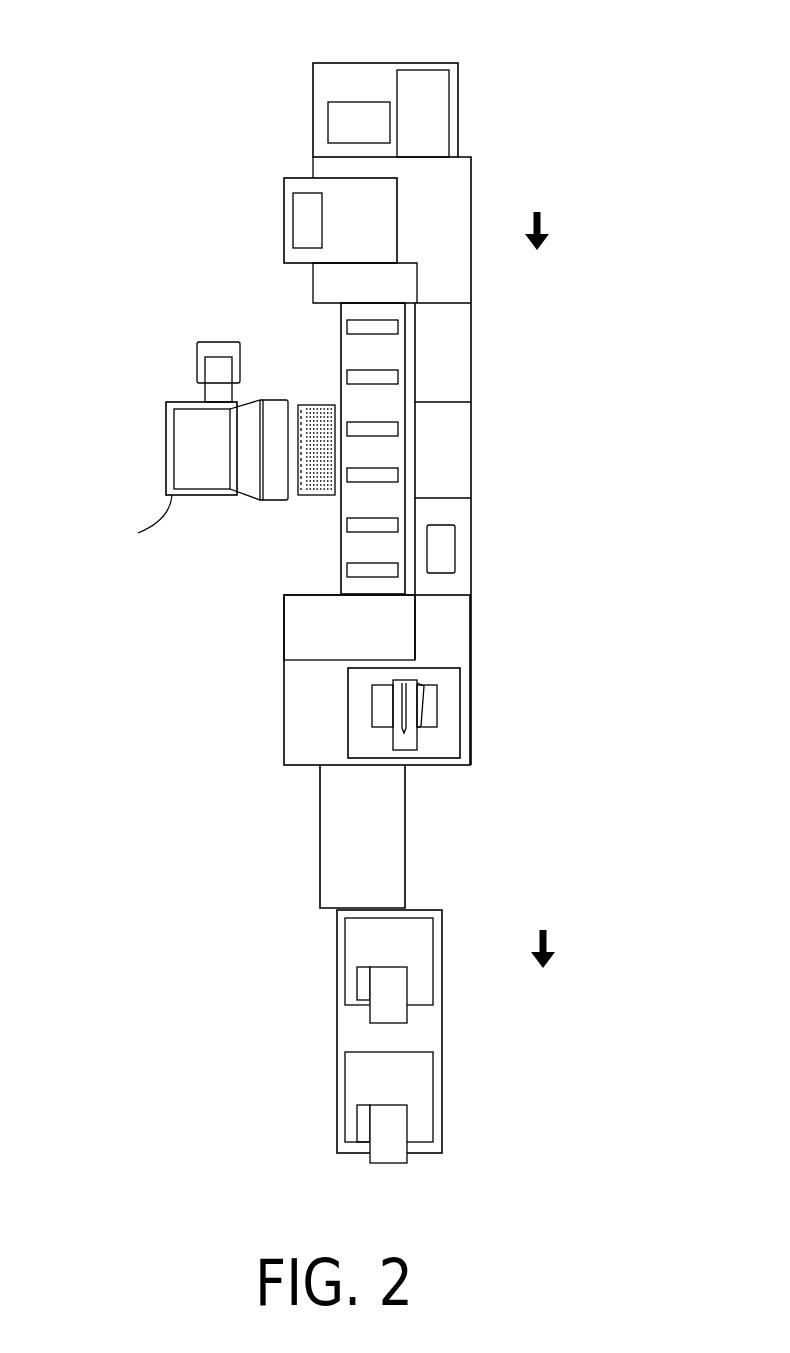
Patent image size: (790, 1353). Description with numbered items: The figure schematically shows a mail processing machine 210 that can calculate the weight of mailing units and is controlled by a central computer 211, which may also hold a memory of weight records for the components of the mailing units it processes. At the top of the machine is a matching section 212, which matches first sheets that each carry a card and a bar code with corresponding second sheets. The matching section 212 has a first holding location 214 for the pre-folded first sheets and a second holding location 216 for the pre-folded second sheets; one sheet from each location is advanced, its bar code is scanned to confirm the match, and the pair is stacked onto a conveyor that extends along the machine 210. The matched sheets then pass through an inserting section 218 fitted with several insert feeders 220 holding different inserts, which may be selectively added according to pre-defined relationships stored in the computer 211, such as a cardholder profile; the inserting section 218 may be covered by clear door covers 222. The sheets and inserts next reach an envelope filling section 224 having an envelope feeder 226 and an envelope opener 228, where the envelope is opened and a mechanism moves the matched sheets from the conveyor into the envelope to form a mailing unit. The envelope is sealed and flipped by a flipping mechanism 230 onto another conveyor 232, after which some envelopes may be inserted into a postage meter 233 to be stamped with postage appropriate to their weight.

The mail processing machine 210 is at (528, 44).
The central computer 211 is at (197, 457).
The matching section 212 is at (487, 145).
The first holding location 214 is at (292, 212).
The second holding location 216 is at (327, 128).
The inserting section 218 is at (498, 450).
The insert feeders 220 is at (370, 327).
The clear door covers 222 is at (414, 520).
The envelope filling section 224 is at (512, 610).
The envelope feeder 226 is at (448, 553).
The envelope opener 228 is at (409, 620).
The flipping mechanism 230 is at (429, 693).
The conveyor 232 is at (369, 812).
The postage meter 233 is at (384, 987).